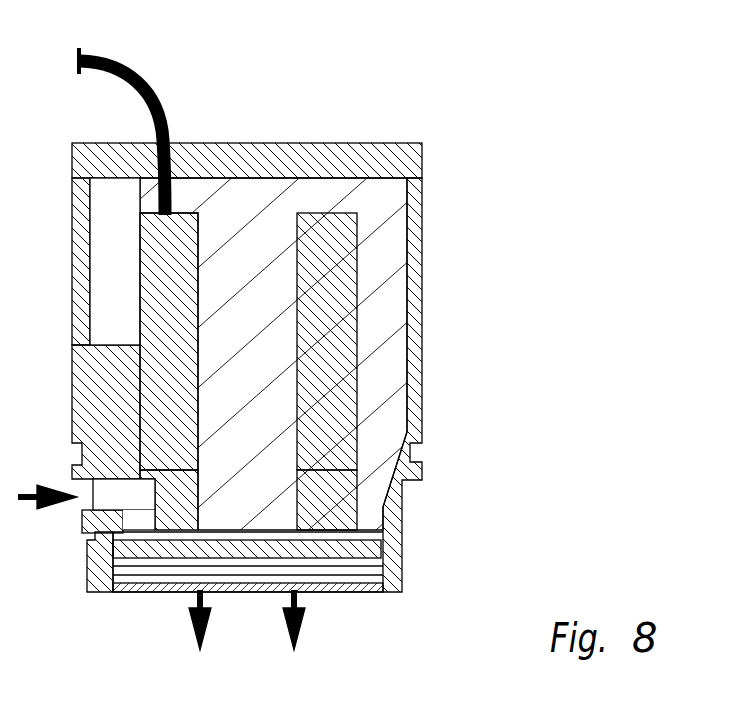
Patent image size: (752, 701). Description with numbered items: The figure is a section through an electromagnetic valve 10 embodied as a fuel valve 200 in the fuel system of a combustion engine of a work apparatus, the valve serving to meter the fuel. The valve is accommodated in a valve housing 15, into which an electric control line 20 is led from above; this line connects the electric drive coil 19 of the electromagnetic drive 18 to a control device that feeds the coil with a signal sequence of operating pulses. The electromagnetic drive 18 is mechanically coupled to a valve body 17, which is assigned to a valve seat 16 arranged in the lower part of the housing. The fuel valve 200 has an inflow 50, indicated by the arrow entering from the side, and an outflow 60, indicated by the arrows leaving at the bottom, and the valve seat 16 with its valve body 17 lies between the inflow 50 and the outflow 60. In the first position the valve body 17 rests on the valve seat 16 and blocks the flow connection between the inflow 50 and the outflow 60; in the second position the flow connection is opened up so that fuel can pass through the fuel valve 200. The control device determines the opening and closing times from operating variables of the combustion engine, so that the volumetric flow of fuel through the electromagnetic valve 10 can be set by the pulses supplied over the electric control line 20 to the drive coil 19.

The electromagnetic valve 10 is at (188, 515).
The valve housing 15 is at (420, 272).
The valve seat 16 is at (118, 537).
The valve body 17 is at (158, 550).
The electromagnetic drive 18 is at (118, 263).
The electric drive coil 19 is at (150, 382).
The electric control line 20 is at (150, 78).
The inflow 50 is at (77, 485).
The outflow 60 is at (303, 592).
The fuel valve 200 is at (385, 145).